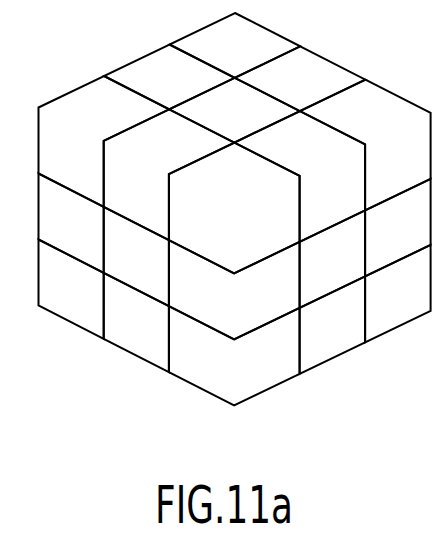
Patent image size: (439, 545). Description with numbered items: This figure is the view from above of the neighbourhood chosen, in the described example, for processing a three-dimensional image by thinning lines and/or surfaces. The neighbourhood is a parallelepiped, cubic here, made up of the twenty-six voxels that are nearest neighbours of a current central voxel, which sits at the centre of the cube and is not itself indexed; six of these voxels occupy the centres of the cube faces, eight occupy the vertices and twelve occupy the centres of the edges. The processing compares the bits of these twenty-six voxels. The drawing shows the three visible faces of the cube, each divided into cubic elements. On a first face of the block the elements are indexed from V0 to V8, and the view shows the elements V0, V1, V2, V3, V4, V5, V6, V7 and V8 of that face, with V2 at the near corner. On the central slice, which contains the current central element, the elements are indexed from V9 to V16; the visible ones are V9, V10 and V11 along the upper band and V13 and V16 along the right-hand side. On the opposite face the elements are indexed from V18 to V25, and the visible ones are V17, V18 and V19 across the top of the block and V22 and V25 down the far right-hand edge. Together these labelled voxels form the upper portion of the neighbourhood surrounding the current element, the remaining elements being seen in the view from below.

The neighbourhood element V0 is at (104, 141).
The neighbourhood element V1 is at (169, 174).
The neighbourhood element V2 is at (234, 208).
The neighbourhood element V3 is at (71, 223).
The neighbourhood element V4 is at (136, 256).
The neighbourhood element V5 is at (234, 289).
The neighbourhood element V6 is at (71, 289).
The neighbourhood element V7 is at (136, 322).
The neighbourhood element V8 is at (234, 355).
The neighbourhood element V9 is at (169, 77).
The neighbourhood element V10 is at (234, 110).
The neighbourhood element V11 is at (299, 176).
The neighbourhood element V13 is at (333, 259).
The neighbourhood element V16 is at (333, 325).
The neighbourhood element V17 is at (235, 45).
The neighbourhood element V18 is at (300, 78).
The neighbourhood element V19 is at (365, 145).
The neighbourhood element V22 is at (398, 228).
The neighbourhood element V25 is at (398, 294).